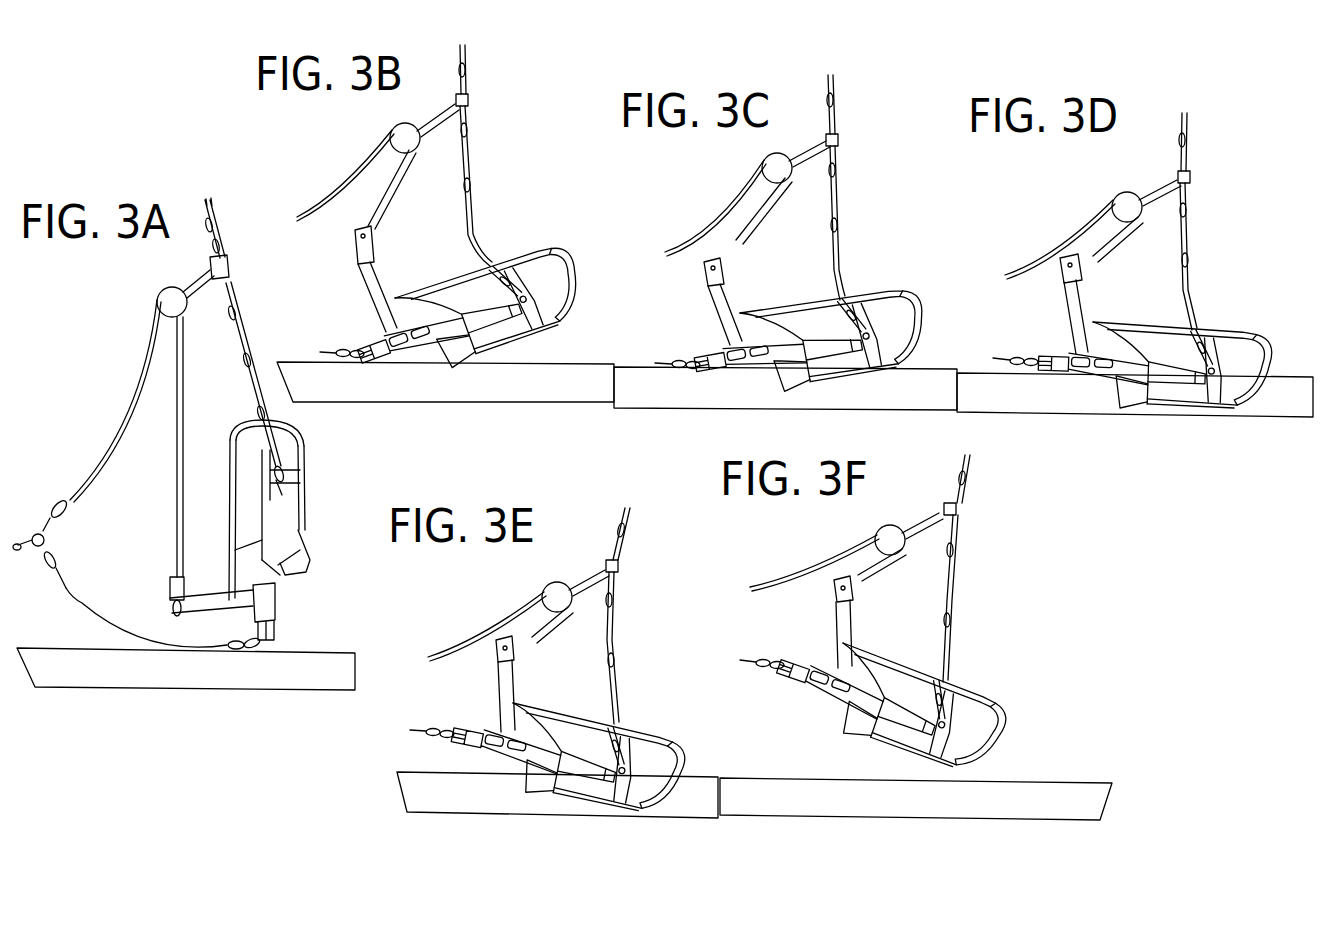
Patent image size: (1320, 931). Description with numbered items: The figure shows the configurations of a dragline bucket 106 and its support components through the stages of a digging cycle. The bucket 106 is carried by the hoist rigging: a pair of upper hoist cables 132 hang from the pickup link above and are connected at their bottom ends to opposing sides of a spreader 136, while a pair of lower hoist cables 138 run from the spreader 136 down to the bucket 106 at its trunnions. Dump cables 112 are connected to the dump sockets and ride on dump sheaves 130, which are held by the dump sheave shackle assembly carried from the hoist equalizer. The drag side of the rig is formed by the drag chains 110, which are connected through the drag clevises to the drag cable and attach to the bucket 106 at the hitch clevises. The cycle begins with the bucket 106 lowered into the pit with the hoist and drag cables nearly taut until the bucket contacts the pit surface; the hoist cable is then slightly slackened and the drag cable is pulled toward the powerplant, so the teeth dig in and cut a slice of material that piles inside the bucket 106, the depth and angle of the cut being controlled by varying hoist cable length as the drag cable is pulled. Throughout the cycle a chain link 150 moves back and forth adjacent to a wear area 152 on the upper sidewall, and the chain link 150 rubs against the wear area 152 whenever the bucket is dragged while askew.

In FIG. 3A, the bucket 106 is at (290, 483).
In FIG. 3A, the drag chains 110 is at (82, 603).
In FIG. 3A, the dump cables 112 is at (120, 420).
In FIG. 3A, the dump sheaves 130 is at (160, 293).
In FIG. 3A, the upper hoist cables 132 is at (232, 307).
In FIG. 3A, the spreader 136 is at (250, 355).
In FIG. 3A, the lower hoist cables 138 is at (270, 438).
In FIG. 3B, the chain link 150 is at (490, 262).
In FIG. 3C, the chain link 150 is at (846, 296).
In FIG. 3D, the chain link 150 is at (1195, 328).
In FIG. 3E, the chain link 150 is at (620, 722).
In FIG. 3F, the chain link 150 is at (949, 682).
In FIG. 3B, the wear area 152 is at (500, 262).
In FIG. 3C, the wear area 152 is at (852, 295).
In FIG. 3D, the wear area 152 is at (1200, 328).
In FIG. 3E, the wear area 152 is at (628, 722).
In FIG. 3F, the wear area 152 is at (955, 686).